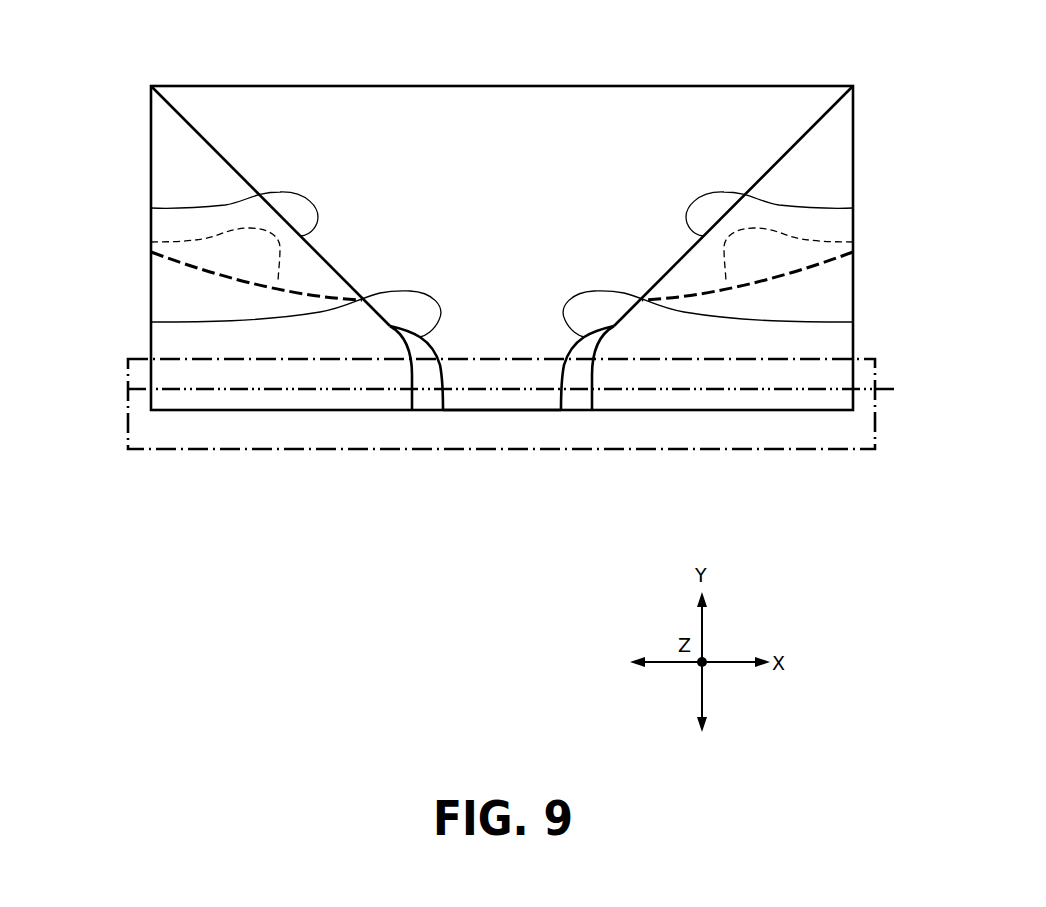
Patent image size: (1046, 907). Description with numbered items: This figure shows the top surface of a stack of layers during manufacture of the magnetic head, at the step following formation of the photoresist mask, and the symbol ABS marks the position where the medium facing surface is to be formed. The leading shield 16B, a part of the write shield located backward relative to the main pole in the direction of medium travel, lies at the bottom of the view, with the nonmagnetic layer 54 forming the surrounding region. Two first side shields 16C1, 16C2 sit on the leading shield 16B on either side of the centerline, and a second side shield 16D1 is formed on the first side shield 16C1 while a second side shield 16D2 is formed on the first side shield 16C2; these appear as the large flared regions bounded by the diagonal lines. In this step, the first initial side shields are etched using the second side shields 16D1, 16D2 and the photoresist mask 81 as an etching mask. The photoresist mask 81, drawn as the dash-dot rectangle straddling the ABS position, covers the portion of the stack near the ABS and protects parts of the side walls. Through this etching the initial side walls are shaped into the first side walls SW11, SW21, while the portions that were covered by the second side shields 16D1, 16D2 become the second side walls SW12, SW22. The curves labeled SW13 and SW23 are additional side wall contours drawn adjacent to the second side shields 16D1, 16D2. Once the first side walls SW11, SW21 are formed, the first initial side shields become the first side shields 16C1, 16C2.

The nonmagnetic layer 54 is at (502, 100).
The second side shield 16D1 is at (159, 151).
The second side shield 16D2 is at (845, 151).
The first side shield 16C1 is at (427, 402).
The first side shield 16C2 is at (573, 402).
The leading shield 16B is at (498, 402).
The first side wall SW11 is at (151, 322).
The second side wall SW12 is at (151, 242).
The third side wall SW13 is at (151, 208).
The first side wall SW21 is at (853, 322).
The second side wall SW22 is at (853, 242).
The sixth side wall SW23 is at (853, 208).
The photoresist mask 81 is at (198, 450).
The position where the medium facing surface is to be formed ABS is at (128, 389).